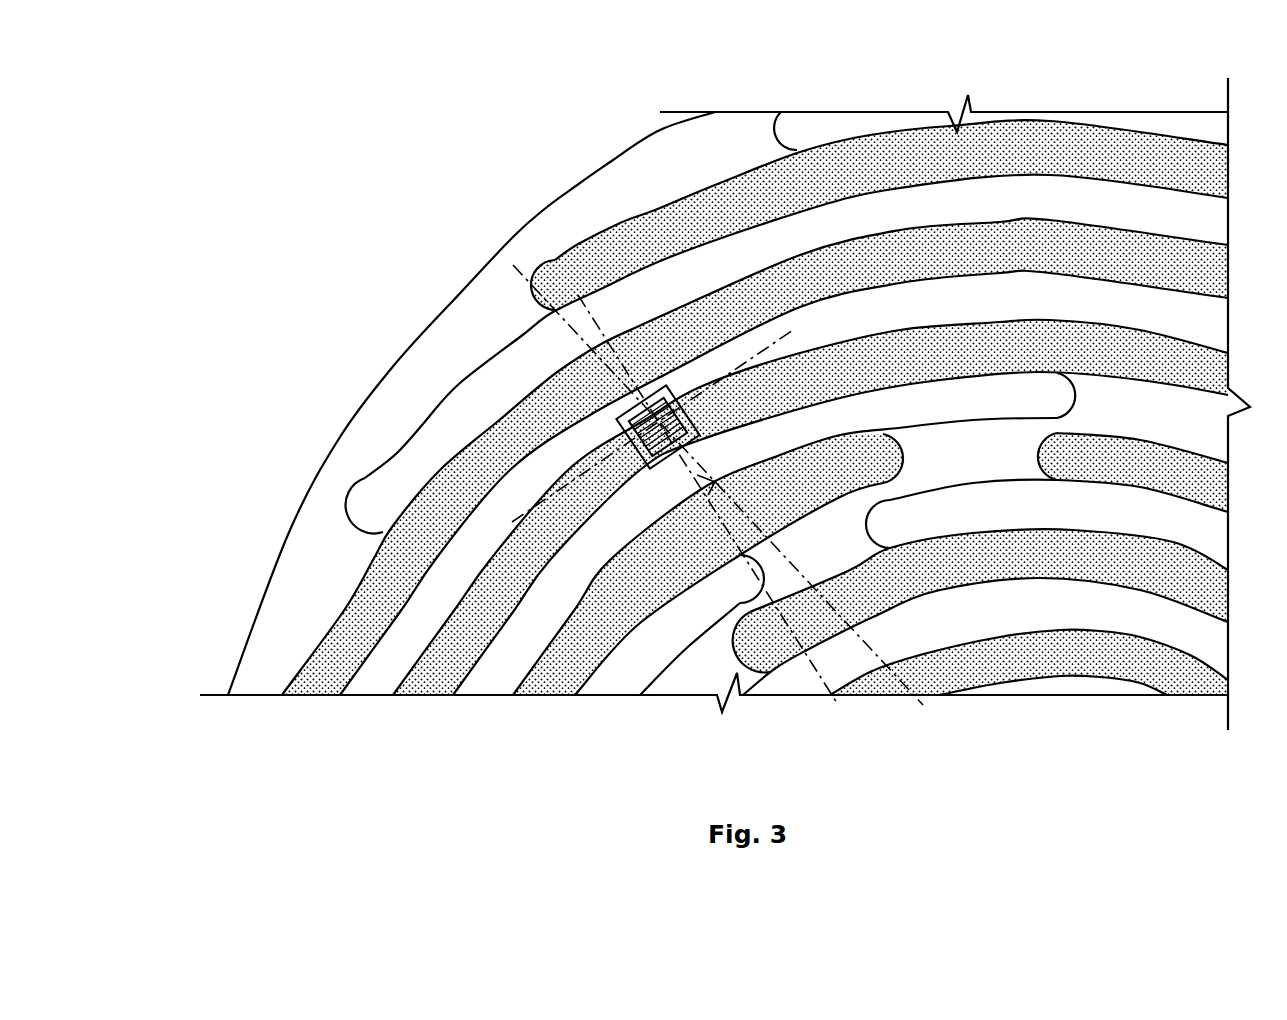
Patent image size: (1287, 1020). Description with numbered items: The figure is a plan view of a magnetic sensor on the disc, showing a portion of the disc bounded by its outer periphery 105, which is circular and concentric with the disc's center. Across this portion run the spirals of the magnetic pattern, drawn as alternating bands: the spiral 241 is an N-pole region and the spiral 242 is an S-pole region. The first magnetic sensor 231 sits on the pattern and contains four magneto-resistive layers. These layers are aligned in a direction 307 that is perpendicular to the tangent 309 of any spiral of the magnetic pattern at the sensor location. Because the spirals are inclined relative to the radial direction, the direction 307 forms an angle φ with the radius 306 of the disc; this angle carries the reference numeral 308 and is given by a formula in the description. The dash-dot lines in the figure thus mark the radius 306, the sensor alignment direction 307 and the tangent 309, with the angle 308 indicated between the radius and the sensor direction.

The outer periphery 105 is at (581, 182).
The first magnetic sensor 231 is at (672, 392).
The spiral 241 is at (343, 612).
The spiral 242 is at (462, 383).
The radius 306 is at (510, 270).
The direction 307 is at (820, 673).
The angle φ 308 is at (697, 483).
The tangent 309 is at (547, 490).